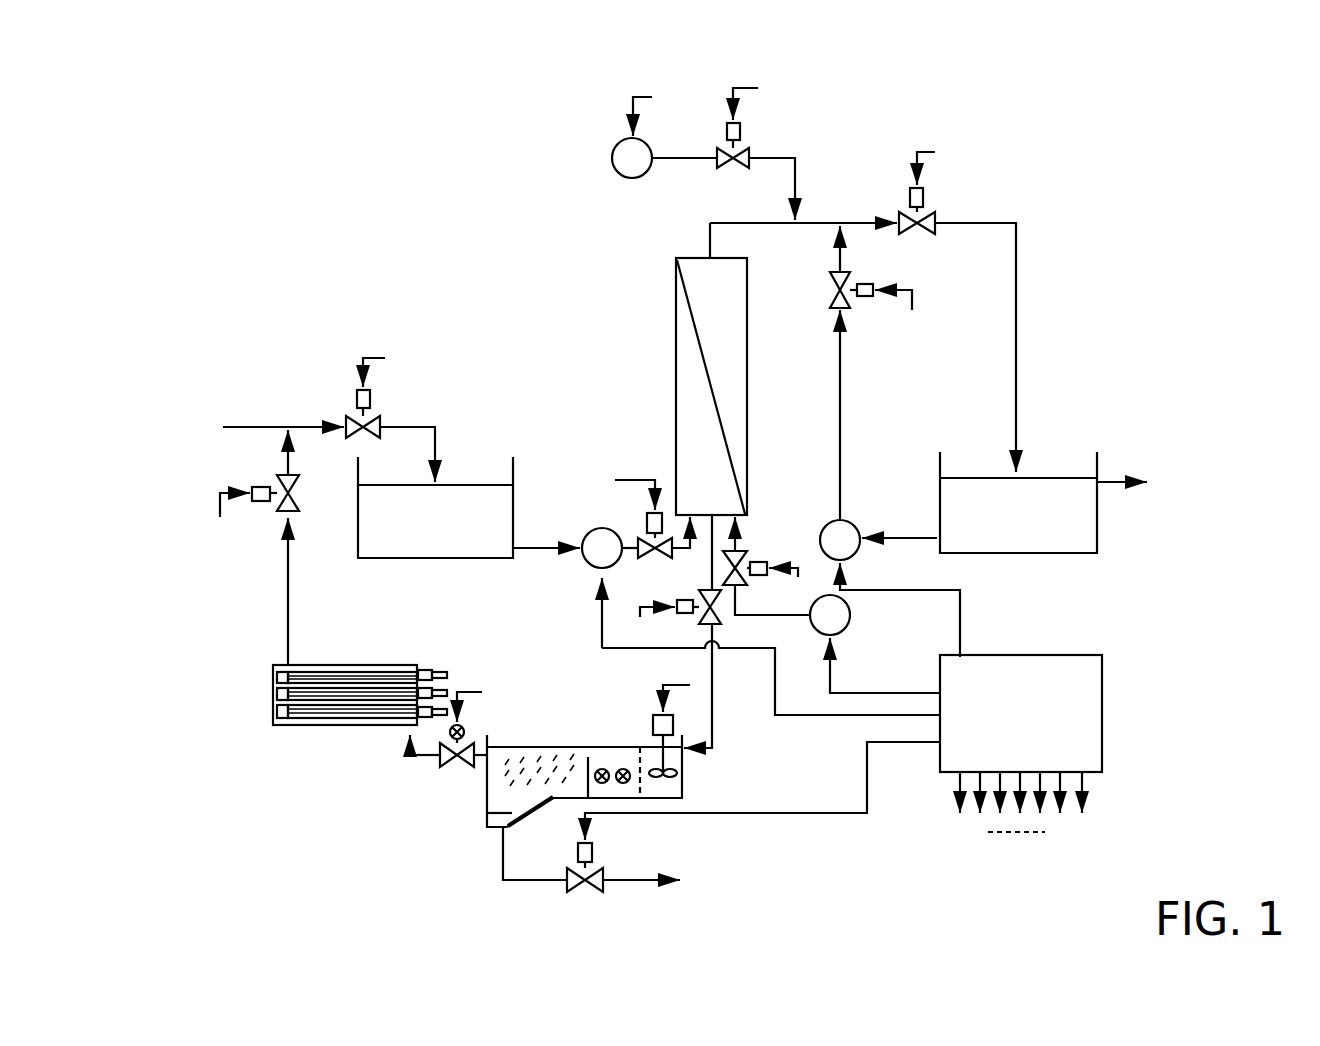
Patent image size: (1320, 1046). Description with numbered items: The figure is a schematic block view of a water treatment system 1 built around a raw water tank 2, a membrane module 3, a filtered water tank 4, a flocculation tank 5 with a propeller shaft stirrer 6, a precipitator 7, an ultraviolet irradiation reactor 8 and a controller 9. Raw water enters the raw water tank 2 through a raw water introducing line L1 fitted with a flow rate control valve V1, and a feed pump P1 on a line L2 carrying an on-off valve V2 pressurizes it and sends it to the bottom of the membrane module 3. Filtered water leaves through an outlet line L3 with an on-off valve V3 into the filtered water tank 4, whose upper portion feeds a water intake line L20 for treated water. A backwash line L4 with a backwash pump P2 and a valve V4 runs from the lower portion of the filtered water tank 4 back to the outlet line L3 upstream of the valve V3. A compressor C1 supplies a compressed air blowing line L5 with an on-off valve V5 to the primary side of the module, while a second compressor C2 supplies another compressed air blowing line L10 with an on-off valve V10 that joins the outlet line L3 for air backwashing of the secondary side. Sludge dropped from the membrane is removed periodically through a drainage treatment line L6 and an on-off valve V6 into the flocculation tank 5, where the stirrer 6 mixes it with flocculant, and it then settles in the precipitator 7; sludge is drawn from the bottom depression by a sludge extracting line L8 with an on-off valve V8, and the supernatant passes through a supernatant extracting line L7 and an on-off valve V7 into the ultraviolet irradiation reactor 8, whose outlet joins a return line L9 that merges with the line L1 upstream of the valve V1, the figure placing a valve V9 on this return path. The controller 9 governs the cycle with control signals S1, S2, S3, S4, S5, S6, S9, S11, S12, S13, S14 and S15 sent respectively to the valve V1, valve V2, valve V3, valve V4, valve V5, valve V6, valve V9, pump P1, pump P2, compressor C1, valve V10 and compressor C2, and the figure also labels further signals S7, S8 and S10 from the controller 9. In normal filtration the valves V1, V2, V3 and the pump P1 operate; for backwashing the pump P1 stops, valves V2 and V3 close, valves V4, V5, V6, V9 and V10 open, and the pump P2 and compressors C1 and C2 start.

The water treatment system 1 is at (448, 242).
The raw water tank 2 is at (513, 493).
The membrane module 3 is at (675, 305).
The filtered water tank 4 is at (1097, 463).
The flocculation tank 5 is at (645, 743).
The stirrer 6 is at (674, 728).
The precipitator 7 is at (508, 780).
The ultraviolet irradiation reactor 8 is at (322, 720).
The controller 9 is at (1104, 715).
The flow rate control valve V1 is at (378, 413).
The on-off valve V2 is at (638, 543).
The on-off valve V3 is at (935, 217).
The valve V4 is at (830, 290).
The on-off valve V5 is at (747, 548).
The on-off valve V6 is at (722, 620).
The on-off valve V7 is at (467, 768).
The on-off valve V8 is at (595, 892).
The valve V9 is at (277, 510).
The on-off valve V10 is at (752, 150).
The feed pump P1 is at (585, 565).
The backwash pump P2 is at (832, 520).
The compressor C1 is at (852, 615).
The second compressor C2 is at (612, 160).
The raw water introducing line L1 is at (299, 424).
The raw water supply line L2 is at (548, 545).
The outlet line L3 is at (1018, 295).
The backwash line L4 is at (840, 375).
The compressed air blowing line L5 is at (798, 618).
The drainage treatment line L6 is at (712, 722).
The supernatant extracting line L7 is at (417, 760).
The sludge extracting line L8 is at (525, 882).
The return line L9 is at (288, 610).
The compressed air blowing line L10 is at (797, 180).
The water intake line L20 is at (1106, 486).
The control signal S1 is at (393, 365).
The control signal S2 is at (635, 479).
The control signal S3 is at (930, 153).
The control signal S4 is at (911, 300).
The control signal S5 is at (788, 590).
The control signal S6 is at (648, 627).
The control signal S7 is at (489, 700).
The control signal S8 is at (762, 791).
The control signal S9 is at (217, 505).
The control signal S10 is at (673, 681).
The control signal S11 is at (771, 646).
The control signal S12 is at (900, 610).
The control signal S13 is at (885, 665).
The control signal S14 is at (745, 84).
The control signal S15 is at (650, 100).